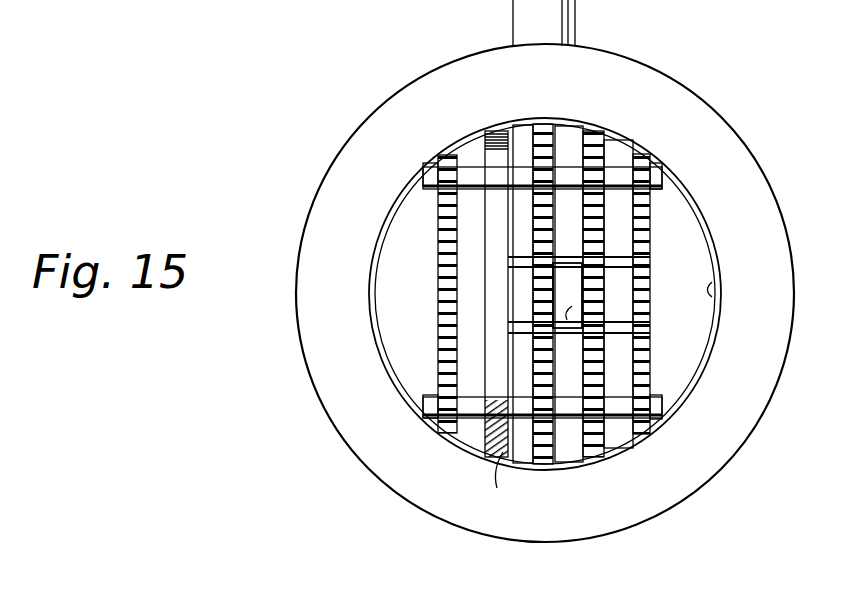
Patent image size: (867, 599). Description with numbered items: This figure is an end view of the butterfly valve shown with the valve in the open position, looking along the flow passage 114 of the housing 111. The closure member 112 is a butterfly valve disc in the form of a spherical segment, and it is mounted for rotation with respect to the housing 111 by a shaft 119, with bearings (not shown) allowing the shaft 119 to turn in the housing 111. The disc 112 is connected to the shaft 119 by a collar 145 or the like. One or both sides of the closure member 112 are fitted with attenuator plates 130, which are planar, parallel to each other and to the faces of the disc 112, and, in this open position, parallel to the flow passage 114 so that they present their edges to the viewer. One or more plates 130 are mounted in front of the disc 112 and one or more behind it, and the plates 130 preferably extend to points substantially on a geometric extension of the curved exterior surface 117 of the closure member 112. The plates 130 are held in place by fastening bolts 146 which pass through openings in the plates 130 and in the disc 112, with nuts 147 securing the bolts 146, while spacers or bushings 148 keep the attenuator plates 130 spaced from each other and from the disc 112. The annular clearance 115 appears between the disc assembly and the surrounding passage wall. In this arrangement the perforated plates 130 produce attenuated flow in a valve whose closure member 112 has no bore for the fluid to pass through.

The housing 111 is at (740, 157).
The closure member 112 is at (490, 318).
The flow passage 114 is at (700, 214).
The annular gap 115 is at (712, 290).
The curved exterior surface 117 is at (504, 483).
The shaft 119 is at (577, 25).
The attenuator plates 130 is at (443, 262).
The collar 145 is at (567, 320).
The fastening bolts 146 is at (658, 185).
The nuts 147 is at (430, 188).
The spacers or bushings 148 is at (603, 175).